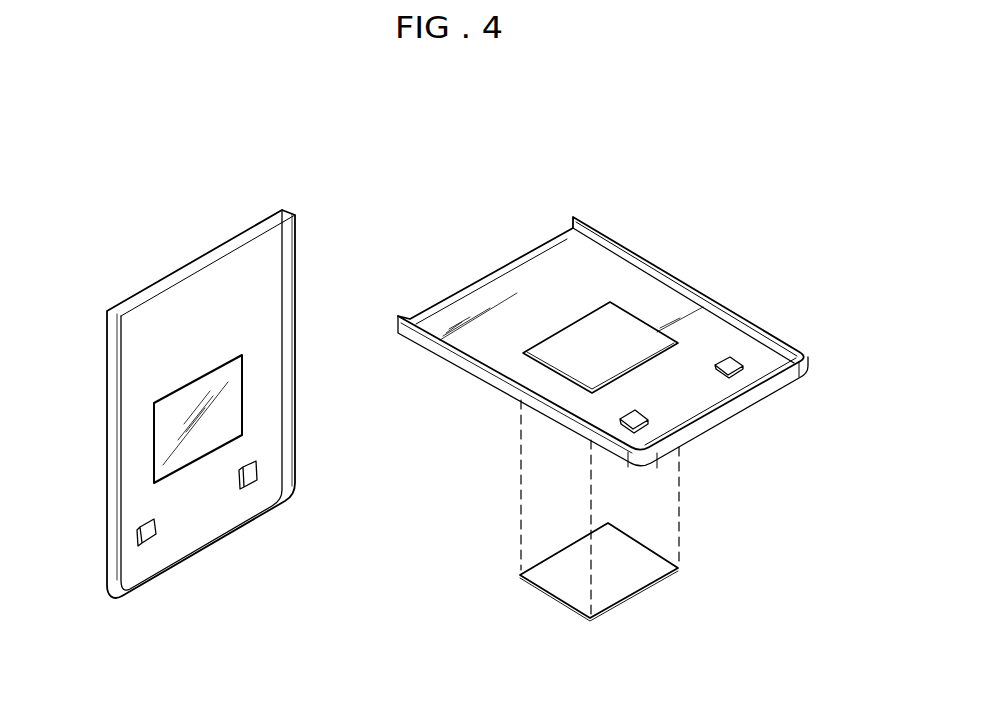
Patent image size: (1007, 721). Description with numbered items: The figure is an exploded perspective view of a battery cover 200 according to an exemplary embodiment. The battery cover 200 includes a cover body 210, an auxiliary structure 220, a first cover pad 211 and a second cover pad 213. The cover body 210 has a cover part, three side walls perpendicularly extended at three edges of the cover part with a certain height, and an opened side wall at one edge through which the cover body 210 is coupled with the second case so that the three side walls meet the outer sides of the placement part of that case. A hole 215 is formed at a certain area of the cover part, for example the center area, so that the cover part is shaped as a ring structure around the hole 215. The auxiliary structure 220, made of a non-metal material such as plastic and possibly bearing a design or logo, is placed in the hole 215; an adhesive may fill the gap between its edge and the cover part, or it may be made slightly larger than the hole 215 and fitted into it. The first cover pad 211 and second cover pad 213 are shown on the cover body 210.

The battery cover 200 is at (440, 158).
The cover body 210 is at (398, 313).
The first cover pad 211 is at (150, 544).
The second cover pad 213 is at (252, 487).
The hole 215 is at (617, 334).
The auxiliary structure 220 is at (243, 381).